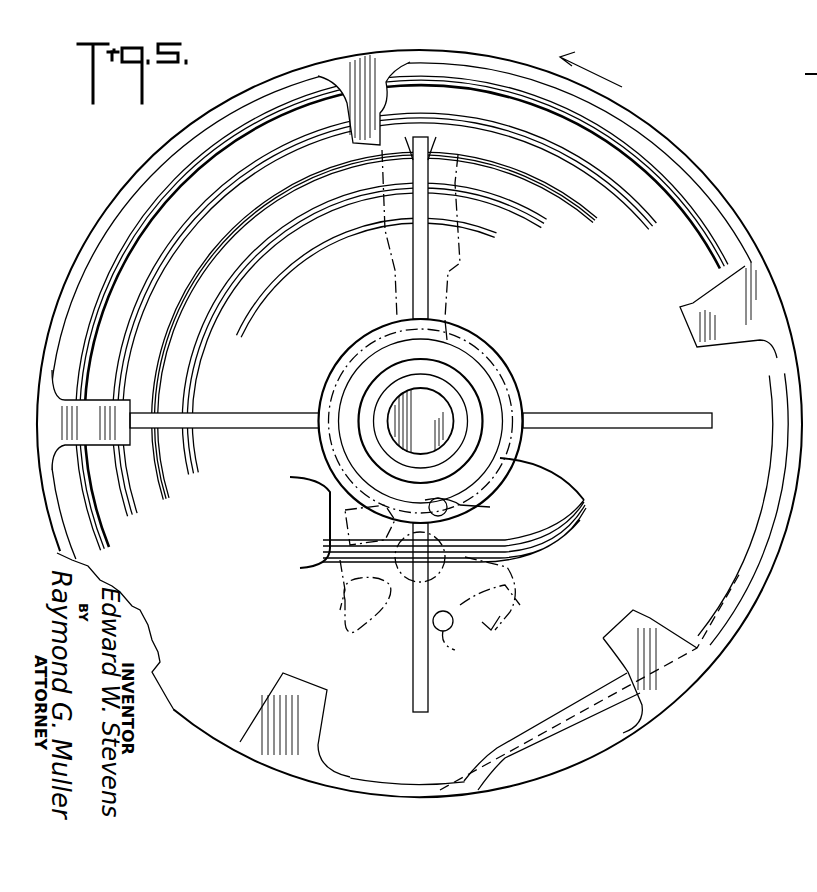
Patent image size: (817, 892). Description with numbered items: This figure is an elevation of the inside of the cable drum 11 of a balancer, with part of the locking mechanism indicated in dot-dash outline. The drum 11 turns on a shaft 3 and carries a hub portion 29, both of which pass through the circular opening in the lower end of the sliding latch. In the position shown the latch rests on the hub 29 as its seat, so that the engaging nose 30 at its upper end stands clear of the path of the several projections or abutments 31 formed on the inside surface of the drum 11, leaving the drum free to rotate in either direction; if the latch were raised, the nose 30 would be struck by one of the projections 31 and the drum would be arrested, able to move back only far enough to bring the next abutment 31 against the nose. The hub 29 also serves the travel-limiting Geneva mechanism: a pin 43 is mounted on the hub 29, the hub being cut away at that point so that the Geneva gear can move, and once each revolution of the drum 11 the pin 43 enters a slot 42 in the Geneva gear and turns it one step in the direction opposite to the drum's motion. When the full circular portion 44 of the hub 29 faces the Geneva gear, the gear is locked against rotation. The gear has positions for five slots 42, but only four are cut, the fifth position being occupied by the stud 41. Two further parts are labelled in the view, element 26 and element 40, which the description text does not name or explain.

The cable drum 11 is at (185, 133).
The projections or abutments 31 is at (368, 40).
The engaging nose 30 is at (460, 183).
The slide 26 is at (447, 297).
The full circular portion of hub 44 is at (445, 367).
The hub portion 29 is at (448, 395).
The shaft 3 is at (428, 421).
The pin 43 is at (492, 507).
The slot 42 is at (358, 612).
The roller 40 is at (397, 618).
The stud 41 is at (440, 635).